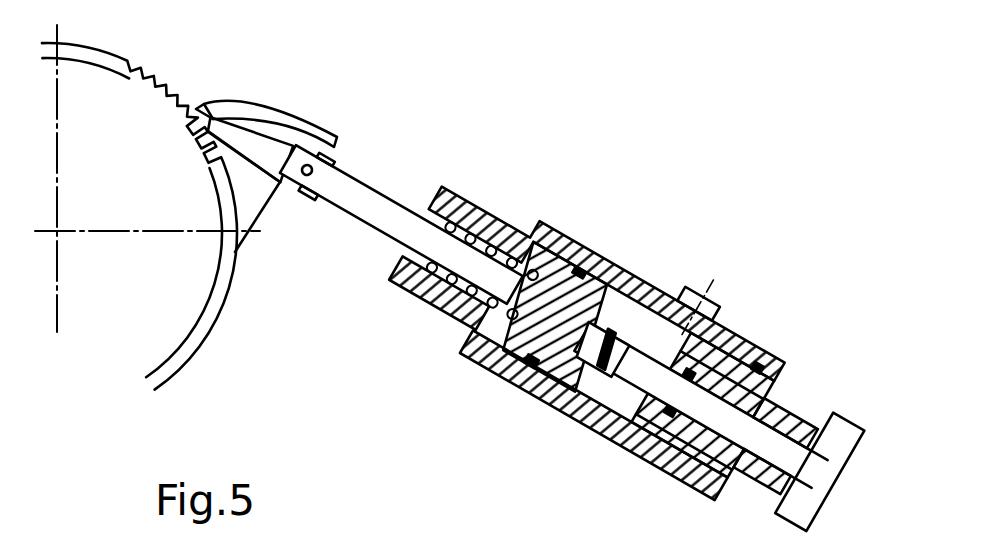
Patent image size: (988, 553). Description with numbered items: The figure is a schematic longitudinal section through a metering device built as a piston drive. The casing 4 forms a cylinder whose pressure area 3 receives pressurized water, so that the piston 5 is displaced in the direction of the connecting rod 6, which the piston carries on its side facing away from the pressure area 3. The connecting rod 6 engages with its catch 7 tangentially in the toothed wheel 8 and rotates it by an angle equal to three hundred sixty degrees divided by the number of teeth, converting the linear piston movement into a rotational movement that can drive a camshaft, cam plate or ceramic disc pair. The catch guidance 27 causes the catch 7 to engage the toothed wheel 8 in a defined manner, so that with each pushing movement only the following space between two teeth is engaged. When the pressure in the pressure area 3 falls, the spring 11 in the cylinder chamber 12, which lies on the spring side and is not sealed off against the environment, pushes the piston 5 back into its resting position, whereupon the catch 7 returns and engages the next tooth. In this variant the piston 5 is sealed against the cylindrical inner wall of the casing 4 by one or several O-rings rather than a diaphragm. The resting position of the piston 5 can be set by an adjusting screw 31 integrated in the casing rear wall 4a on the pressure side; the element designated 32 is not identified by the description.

The toothed wheel 8 is at (128, 88).
The catch 7 is at (216, 113).
The catch guidance 27 is at (248, 208).
The connecting rod 6 is at (363, 204).
The casing 4 is at (582, 335).
The rear wall of the cylinder casing 4a is at (737, 381).
The cylinder chamber 12 is at (439, 292).
The spring 11 is at (482, 271).
The piston 5 is at (554, 317).
The piston seal 32 is at (531, 361).
The pressure area 3 is at (699, 405).
The adjusting screw 31 is at (819, 472).